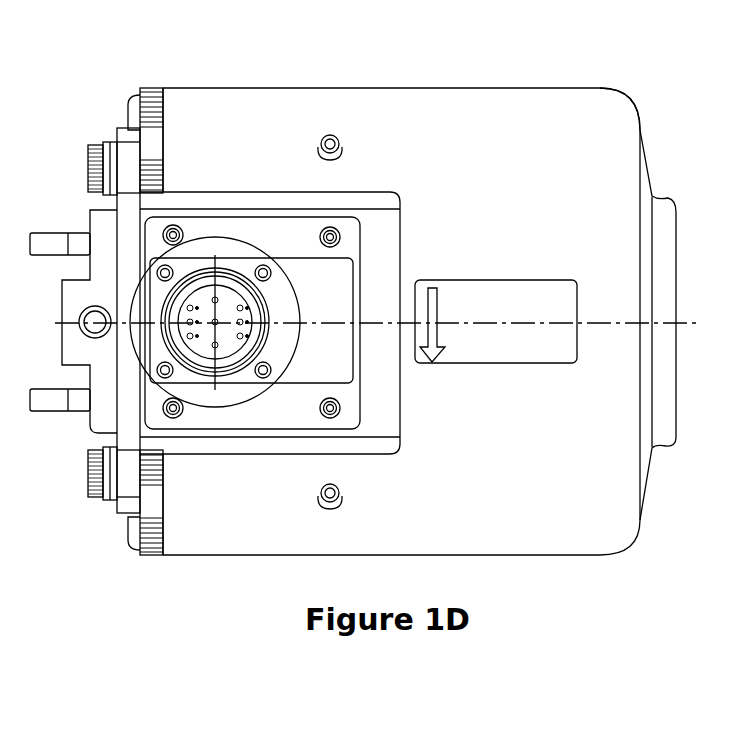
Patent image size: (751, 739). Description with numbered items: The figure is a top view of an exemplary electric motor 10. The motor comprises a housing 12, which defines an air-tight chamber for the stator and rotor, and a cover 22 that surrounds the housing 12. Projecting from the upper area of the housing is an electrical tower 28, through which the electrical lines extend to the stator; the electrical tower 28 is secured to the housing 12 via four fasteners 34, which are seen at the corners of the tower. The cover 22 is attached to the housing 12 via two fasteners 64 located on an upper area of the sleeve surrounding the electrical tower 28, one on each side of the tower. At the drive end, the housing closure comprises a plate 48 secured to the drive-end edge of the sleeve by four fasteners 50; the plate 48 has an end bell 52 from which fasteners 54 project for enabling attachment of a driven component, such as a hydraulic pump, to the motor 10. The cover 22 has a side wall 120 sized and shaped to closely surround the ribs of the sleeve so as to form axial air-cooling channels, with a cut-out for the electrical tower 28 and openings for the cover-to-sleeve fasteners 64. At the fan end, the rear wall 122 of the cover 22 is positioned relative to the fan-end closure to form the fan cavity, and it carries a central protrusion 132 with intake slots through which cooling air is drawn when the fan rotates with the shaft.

The electric motor 10 is at (382, 86).
The housing 12 is at (150, 552).
The cover 22 is at (490, 118).
The electrical tower 28 is at (305, 278).
The fasteners 34 is at (173, 228).
The plate 48 is at (126, 152).
The fasteners 50 is at (92, 170).
The bracket 52 is at (105, 236).
The fasteners 54 is at (48, 243).
The fasteners 64 is at (342, 144).
The side wall 120 is at (548, 106).
The rear wall 122 is at (616, 122).
The central protrusion 132 is at (668, 222).